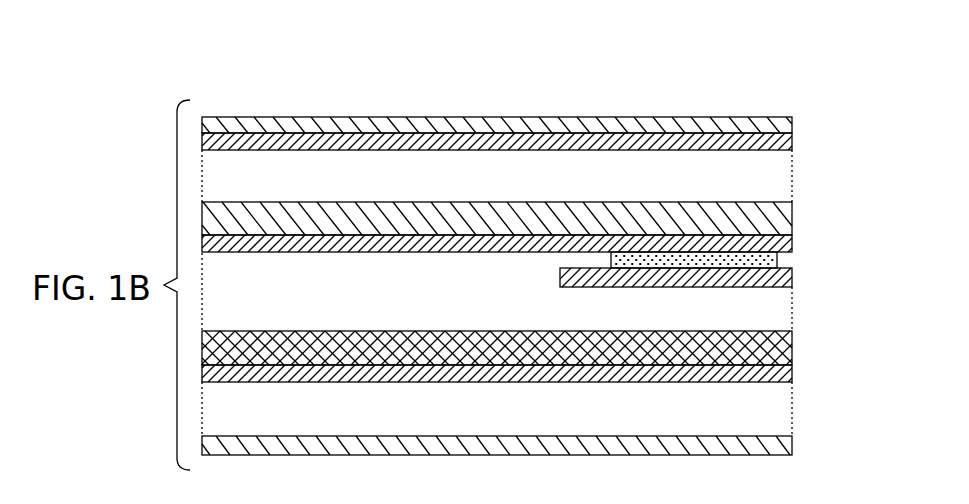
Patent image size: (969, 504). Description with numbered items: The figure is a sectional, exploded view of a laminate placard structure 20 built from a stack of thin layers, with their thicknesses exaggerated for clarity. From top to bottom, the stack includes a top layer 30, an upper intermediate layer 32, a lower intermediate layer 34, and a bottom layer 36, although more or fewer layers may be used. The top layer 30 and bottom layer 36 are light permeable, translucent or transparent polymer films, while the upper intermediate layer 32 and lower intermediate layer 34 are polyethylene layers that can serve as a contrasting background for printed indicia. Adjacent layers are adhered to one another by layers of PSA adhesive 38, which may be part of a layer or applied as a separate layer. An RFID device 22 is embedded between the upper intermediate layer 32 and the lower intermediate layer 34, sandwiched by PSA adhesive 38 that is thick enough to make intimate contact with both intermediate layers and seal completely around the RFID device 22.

The laminate placard structure 20 is at (243, 90).
The RFID device 22 is at (788, 260).
The top layer 30 is at (792, 128).
The upper intermediate layer 32 is at (792, 218).
The lower intermediate layer 34 is at (792, 350).
The bottom layer 36 is at (792, 446).
The PSA adhesive 38 is at (792, 144).